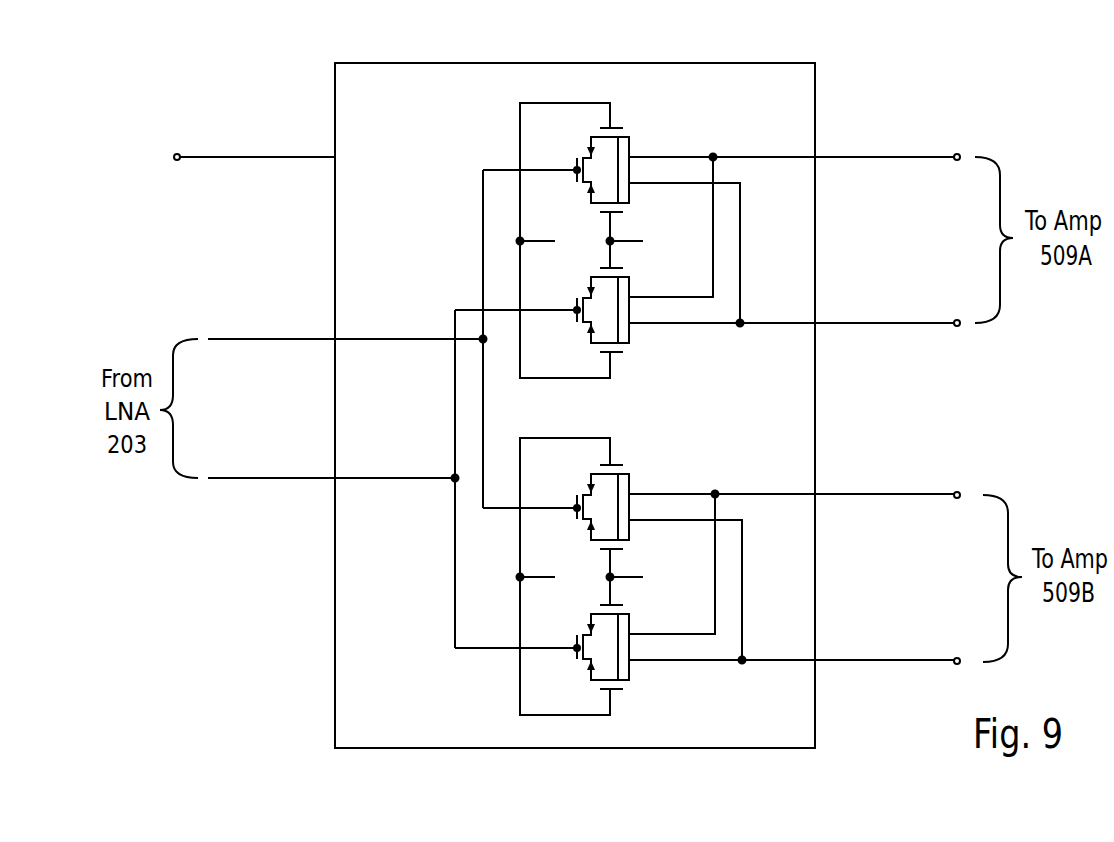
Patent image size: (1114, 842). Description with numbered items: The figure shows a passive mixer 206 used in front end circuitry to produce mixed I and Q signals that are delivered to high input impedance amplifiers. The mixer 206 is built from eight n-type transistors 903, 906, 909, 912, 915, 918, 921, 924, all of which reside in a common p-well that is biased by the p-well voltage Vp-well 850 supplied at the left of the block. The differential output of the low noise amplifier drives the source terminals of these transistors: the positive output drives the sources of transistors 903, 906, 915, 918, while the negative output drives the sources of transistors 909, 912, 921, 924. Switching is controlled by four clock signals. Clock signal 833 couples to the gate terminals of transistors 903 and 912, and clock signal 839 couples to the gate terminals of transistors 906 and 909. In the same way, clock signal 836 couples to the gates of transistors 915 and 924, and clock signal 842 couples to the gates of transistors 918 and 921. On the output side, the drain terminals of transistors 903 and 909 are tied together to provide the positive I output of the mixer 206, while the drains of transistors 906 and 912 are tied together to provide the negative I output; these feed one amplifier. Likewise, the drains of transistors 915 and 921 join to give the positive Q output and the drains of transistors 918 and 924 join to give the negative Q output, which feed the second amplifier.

The mixer 206 is at (390, 63).
The p-well biasing voltage (Vp-well) 850 is at (313, 157).
The n-type transistor 903 is at (628, 148).
The n-type transistor 906 is at (616, 213).
The clock signal 833 is at (557, 243).
The clock signal 839 is at (647, 243).
The n-type transistor 909 is at (663, 260).
The n-type transistor 912 is at (632, 333).
The n-type transistor 915 is at (628, 483).
The n-type transistor 918 is at (617, 549).
The clock signal 836 is at (558, 578).
The clock signal 842 is at (650, 578).
The n-type transistor 921 is at (617, 605).
The n-type transistor 924 is at (630, 668).